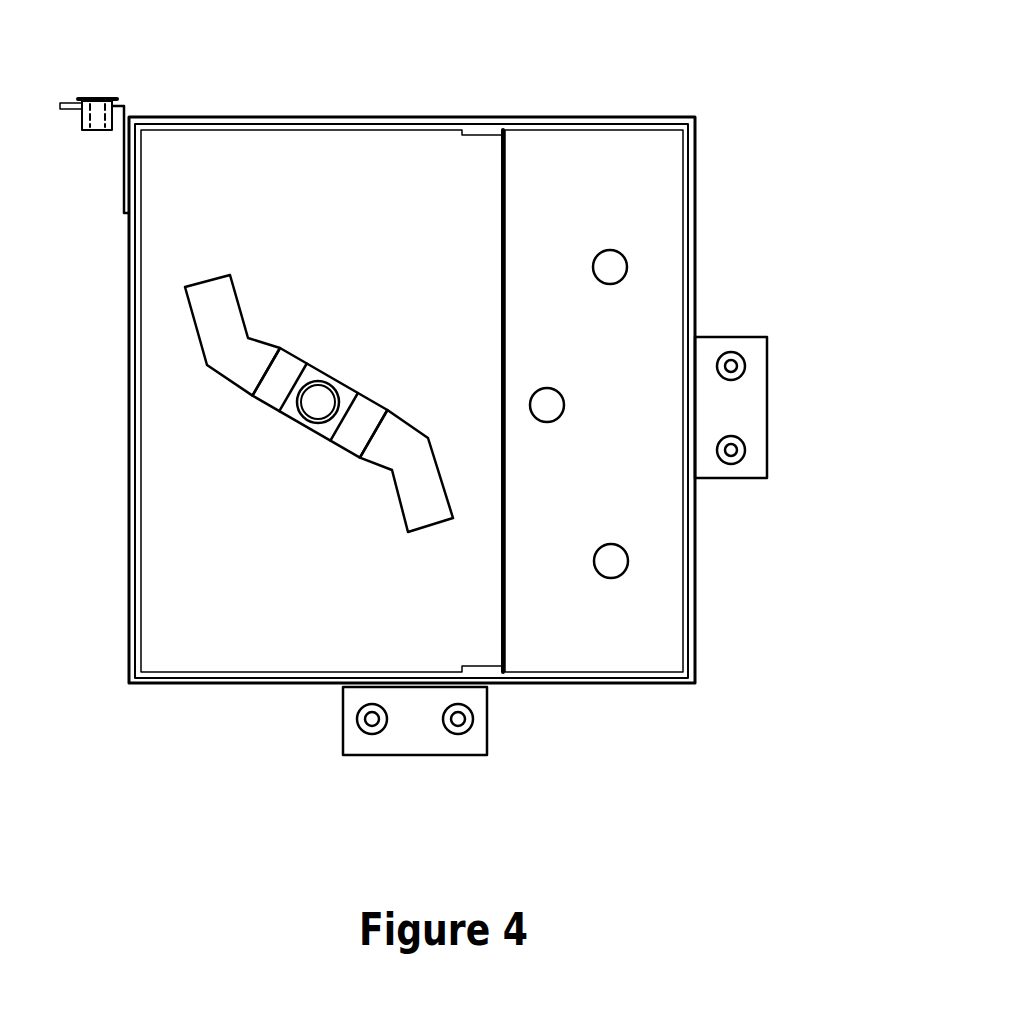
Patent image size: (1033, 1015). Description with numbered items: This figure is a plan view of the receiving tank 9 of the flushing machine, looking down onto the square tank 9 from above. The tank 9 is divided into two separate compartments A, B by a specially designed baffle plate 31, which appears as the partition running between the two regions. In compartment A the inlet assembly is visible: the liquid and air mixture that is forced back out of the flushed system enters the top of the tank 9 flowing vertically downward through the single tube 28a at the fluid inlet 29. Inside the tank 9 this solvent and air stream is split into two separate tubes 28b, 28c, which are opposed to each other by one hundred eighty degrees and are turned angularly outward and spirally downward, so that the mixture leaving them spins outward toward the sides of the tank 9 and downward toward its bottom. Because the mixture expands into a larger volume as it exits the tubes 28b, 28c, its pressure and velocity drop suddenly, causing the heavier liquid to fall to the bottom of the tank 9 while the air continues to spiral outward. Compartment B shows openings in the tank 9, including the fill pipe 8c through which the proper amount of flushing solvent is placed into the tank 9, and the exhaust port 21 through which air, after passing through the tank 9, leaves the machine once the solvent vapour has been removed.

The tank 9 is at (790, 50).
The compartment A is at (363, 165).
The compartment B is at (605, 165).
The baffle plate 31 is at (503, 165).
The exhaust port 21 is at (627, 265).
The fluid inlet 29 is at (547, 413).
The fill pipe 8c is at (625, 562).
The single tube 28a is at (333, 380).
The tube 28b is at (238, 300).
The tube 28c is at (430, 438).